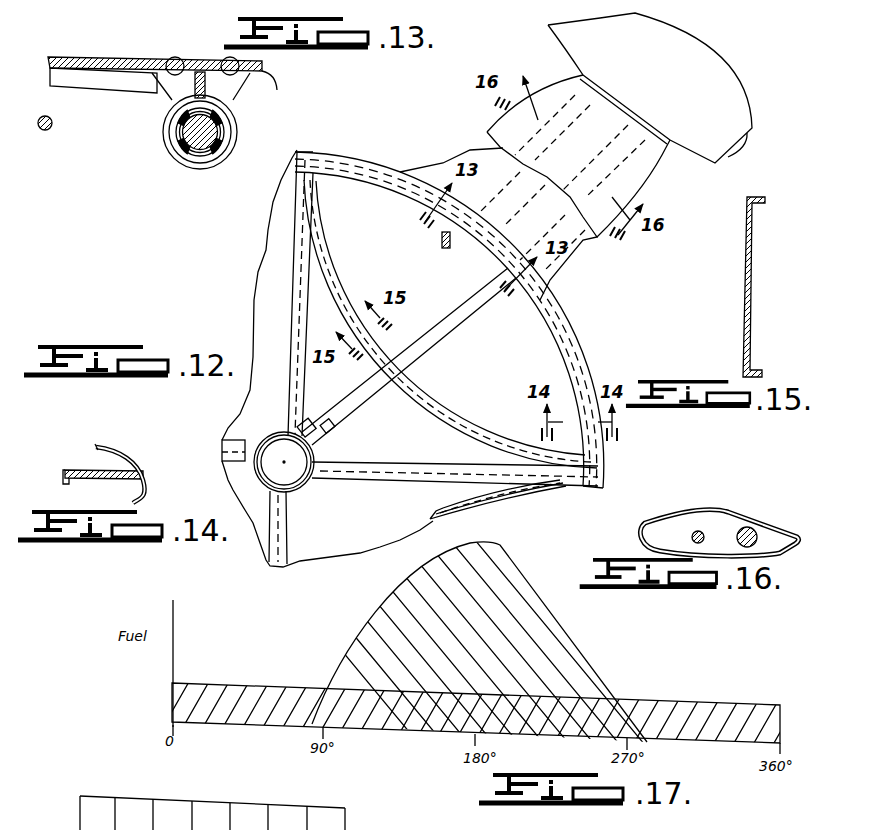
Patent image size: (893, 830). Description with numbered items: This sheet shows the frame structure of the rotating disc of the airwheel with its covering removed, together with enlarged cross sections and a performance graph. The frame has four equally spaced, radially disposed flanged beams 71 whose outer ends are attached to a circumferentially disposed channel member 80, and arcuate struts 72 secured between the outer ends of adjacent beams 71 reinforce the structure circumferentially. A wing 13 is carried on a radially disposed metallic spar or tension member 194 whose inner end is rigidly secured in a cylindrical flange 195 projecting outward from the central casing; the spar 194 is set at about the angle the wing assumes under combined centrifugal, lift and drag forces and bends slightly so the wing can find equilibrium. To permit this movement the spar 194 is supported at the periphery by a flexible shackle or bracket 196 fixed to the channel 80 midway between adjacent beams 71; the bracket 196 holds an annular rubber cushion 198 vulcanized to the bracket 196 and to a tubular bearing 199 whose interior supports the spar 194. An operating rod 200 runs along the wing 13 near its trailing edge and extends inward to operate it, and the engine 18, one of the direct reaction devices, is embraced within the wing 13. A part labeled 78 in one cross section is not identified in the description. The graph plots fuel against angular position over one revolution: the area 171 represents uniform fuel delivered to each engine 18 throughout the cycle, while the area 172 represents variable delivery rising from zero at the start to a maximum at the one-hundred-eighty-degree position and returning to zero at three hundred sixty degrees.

In FIG. 12, the wing 13 is at (638, 178).
In FIG. 16, the wing 13 is at (660, 523).
In FIG. 12, the engine 18 is at (718, 97).
In FIG. 12, the flanged beam 71 is at (297, 306).
In FIG. 12, the arcuate strut 72 is at (330, 268).
In FIG. 15, the arcuate strut 72 is at (753, 270).
In FIG. 14, the spring clip 78 is at (108, 442).
In FIG. 13, the channel member 80 is at (266, 91).
In FIG. 12, the channel member 80 is at (562, 333).
In FIG. 14, the channel member 80 is at (78, 479).
In FIG. 17, the area 171 is at (716, 705).
In FIG. 17, the area 172 is at (597, 643).
In FIG. 13, the spar 194 is at (234, 127).
In FIG. 12, the spar 194 is at (485, 275).
In FIG. 16, the spar 194 is at (750, 527).
In FIG. 12, the cylindrical flange 195 is at (326, 437).
In FIG. 13, the bracket 196 is at (170, 107).
In FIG. 12, the bracket 196 is at (505, 299).
In FIG. 13, the annular cylindrical cushion 198 is at (178, 128).
In FIG. 13, the tubular bearing 199 is at (181, 157).
In FIG. 13, the operating rod 200 is at (48, 131).
In FIG. 12, the operating rod 200 is at (442, 240).
In FIG. 16, the operating rod 200 is at (699, 530).